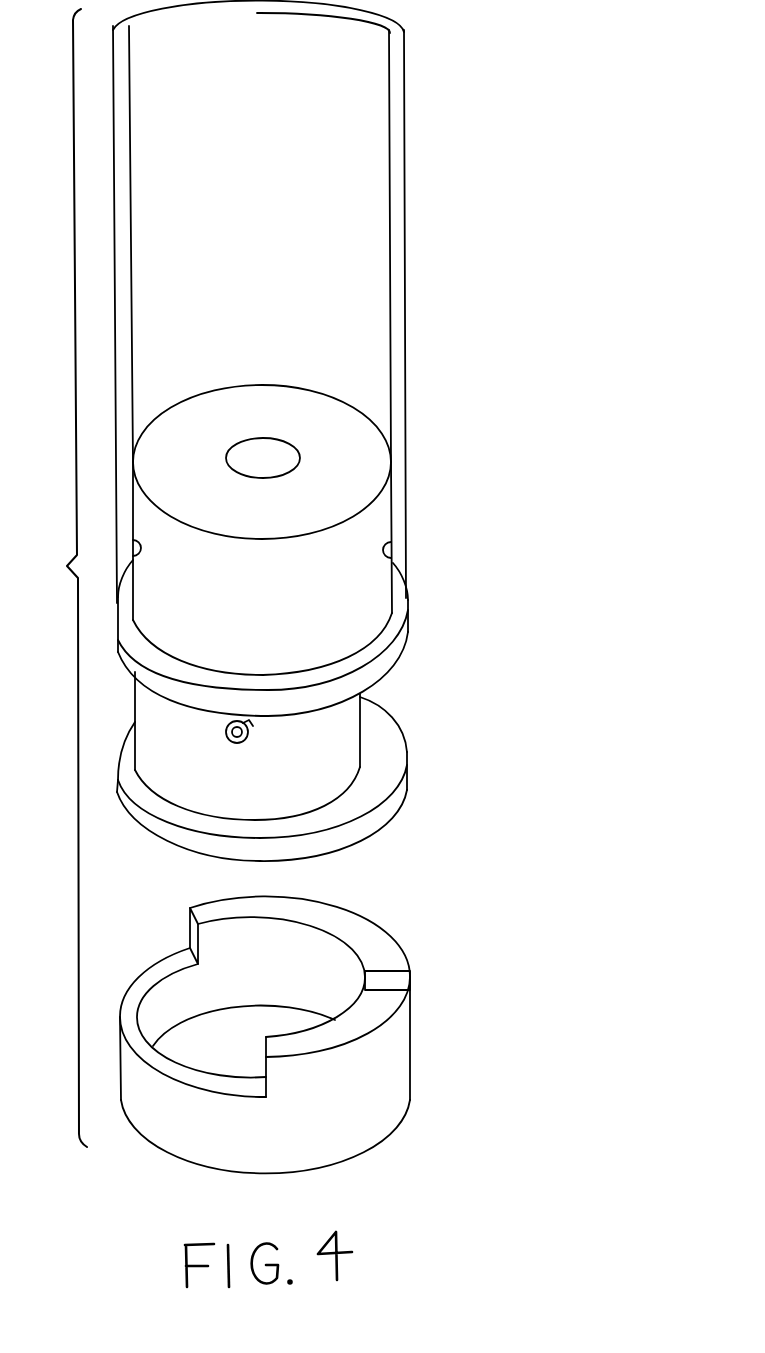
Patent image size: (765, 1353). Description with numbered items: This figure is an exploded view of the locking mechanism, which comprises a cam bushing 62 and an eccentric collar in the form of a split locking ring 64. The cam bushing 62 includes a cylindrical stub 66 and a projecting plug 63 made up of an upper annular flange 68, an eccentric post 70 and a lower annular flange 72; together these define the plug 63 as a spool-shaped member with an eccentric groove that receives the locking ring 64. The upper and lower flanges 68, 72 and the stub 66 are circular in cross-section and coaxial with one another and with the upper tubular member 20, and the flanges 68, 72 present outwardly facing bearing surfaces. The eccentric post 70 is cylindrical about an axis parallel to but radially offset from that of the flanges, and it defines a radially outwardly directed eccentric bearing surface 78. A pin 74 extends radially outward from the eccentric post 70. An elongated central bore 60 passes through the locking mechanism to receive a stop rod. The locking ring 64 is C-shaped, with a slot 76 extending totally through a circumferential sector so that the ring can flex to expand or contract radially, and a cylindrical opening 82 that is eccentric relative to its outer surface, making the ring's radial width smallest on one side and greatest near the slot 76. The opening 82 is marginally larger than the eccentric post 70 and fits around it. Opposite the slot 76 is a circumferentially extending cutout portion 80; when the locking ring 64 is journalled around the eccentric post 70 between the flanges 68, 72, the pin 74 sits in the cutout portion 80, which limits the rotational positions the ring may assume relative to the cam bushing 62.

The upper tubular member 20 is at (404, 236).
The central bore 60 is at (266, 458).
The cam bushing 62 is at (377, 607).
The plug 63 is at (377, 700).
The cylindrical stub 66 is at (400, 579).
The upper annular flange 68 is at (410, 647).
The eccentric post 70 is at (363, 718).
The eccentric bearing surface 78 is at (333, 748).
The lower annular flange 72 is at (316, 779).
The pin 74 is at (232, 745).
The split locking ring 64 is at (318, 1060).
The slot 76 is at (393, 978).
The cutout portion 80 is at (168, 966).
The cylindrical opening 82 is at (213, 1056).